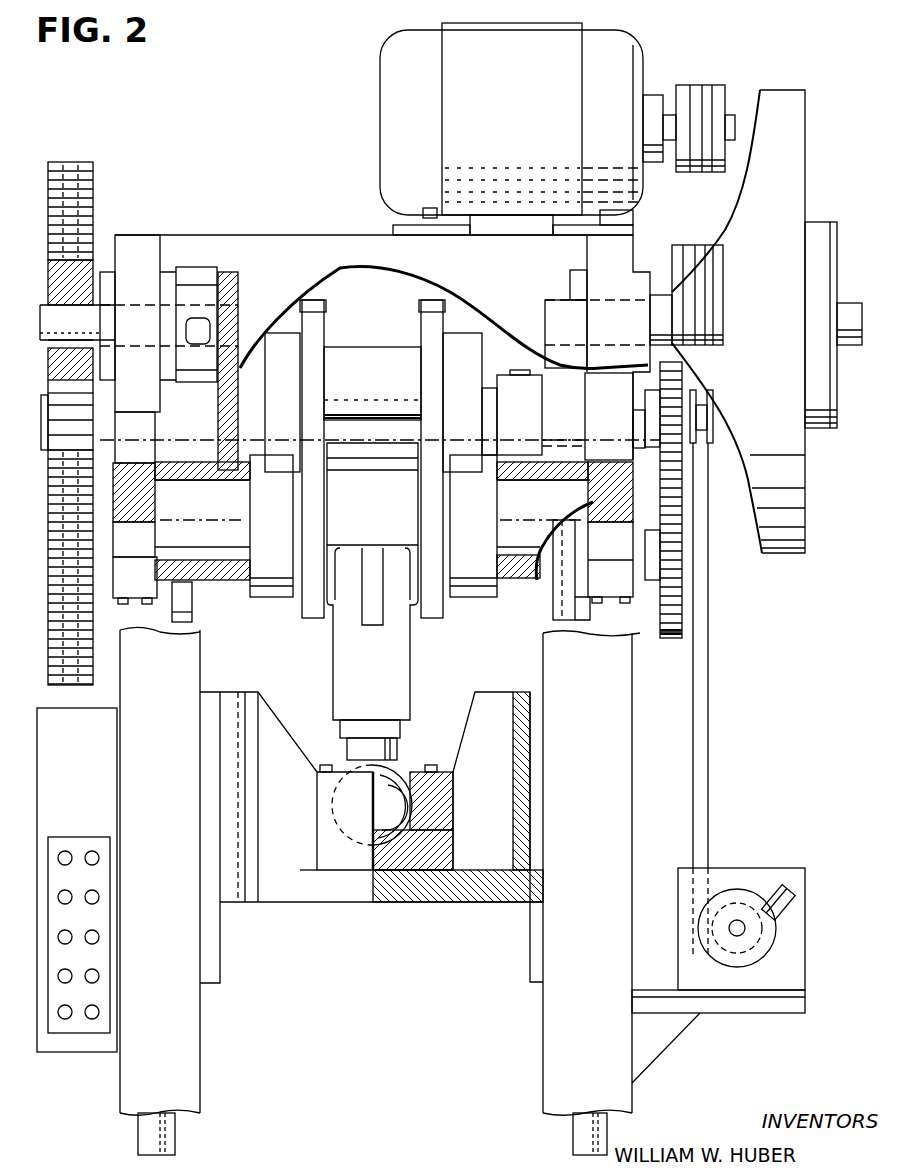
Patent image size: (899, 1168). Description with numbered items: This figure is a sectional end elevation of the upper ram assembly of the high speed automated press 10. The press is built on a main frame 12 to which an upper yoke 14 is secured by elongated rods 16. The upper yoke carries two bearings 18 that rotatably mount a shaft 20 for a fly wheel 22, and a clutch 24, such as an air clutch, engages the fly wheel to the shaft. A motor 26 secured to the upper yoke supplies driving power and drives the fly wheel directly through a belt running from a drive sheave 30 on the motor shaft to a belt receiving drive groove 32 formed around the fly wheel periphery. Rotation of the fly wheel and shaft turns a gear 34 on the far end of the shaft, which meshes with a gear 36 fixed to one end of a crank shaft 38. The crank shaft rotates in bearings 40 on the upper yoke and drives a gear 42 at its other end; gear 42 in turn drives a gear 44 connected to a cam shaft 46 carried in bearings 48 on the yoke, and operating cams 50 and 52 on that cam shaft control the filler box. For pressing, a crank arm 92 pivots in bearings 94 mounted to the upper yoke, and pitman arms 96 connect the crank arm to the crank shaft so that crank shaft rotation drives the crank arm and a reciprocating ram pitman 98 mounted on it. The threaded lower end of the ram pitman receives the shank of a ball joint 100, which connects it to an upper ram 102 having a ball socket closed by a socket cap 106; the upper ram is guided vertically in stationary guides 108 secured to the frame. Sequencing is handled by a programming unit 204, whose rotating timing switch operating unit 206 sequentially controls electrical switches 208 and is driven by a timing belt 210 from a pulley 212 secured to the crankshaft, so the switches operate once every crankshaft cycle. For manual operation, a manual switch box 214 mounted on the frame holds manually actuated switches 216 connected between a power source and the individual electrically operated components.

The high speed automated press 10 is at (239, 110).
The main frame 12 is at (569, 778).
The upper yoke 14 is at (279, 240).
The elongated rods 16 is at (178, 1134).
The bearings 18 is at (122, 282).
The shaft 20 is at (43, 323).
The fly wheel 22 is at (792, 120).
The clutch 24 is at (825, 265).
The motor 26 is at (497, 86).
The drive sheave 30 is at (722, 92).
The belt receiving drive groove 32 is at (686, 262).
The gear 34 is at (53, 277).
The gear 36 is at (48, 538).
The crank shaft 38 is at (269, 381).
The bearings 40 is at (505, 411).
The gear 42 is at (683, 472).
The gear 44 is at (673, 634).
The shaft 46 is at (541, 572).
The bearings 48 is at (122, 585).
The operating cam 50 is at (562, 608).
The operating cam 52 is at (190, 610).
The crank arm 92 is at (257, 522).
The bearings 94 is at (214, 580).
The pitman arms 96 is at (325, 327).
The ram pitman 98 is at (359, 670).
The ball joint 100 is at (330, 835).
The upper ram 102 is at (412, 892).
The socket cap 106 is at (420, 770).
The stationary guides 108 is at (210, 912).
The programming unit 204 is at (737, 862).
The rotating timing switch operating unit 206 is at (698, 930).
The electrical switches 208 is at (792, 904).
The timing belt 210 is at (708, 760).
The pulley 212 is at (713, 412).
The manual switch box 214 is at (60, 800).
The manually actuated switches 216 is at (86, 850).